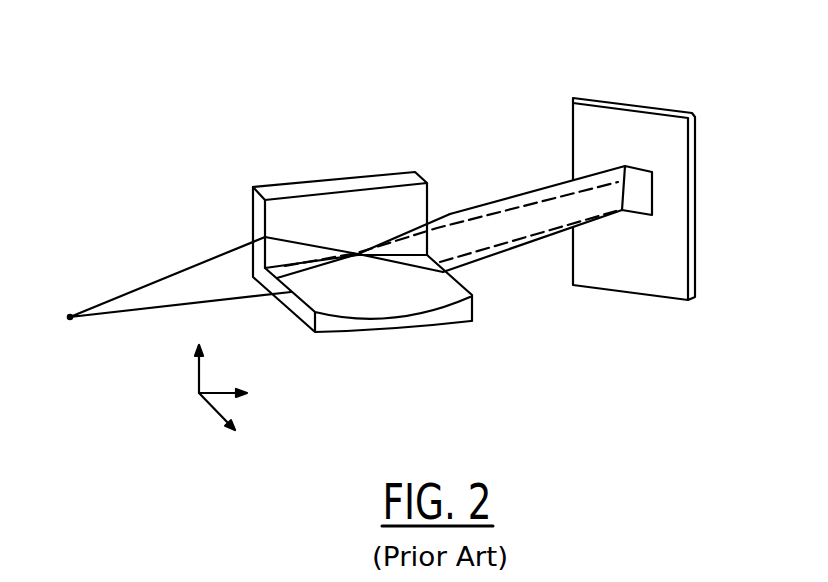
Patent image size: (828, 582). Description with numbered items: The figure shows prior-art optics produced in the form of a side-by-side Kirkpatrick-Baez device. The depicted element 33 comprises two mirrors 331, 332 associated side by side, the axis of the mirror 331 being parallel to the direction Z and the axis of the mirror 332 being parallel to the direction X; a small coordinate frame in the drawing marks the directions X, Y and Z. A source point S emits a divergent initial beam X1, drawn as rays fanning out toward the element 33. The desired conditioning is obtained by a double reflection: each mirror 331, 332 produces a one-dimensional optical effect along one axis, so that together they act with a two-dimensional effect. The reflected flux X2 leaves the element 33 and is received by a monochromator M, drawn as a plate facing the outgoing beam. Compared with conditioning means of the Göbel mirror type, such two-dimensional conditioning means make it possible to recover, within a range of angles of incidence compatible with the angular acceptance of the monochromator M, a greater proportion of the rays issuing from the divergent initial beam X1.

The element 33 is at (414, 217).
The mirror 331 is at (408, 197).
The mirror 332 is at (414, 269).
The monochromator M is at (685, 95).
The light source point S is at (62, 335).
The divergent initial beam X1 is at (140, 288).
The flux X2 is at (541, 188).
The direction X is at (229, 423).
The Y axis Y is at (233, 383).
The direction Z is at (207, 356).